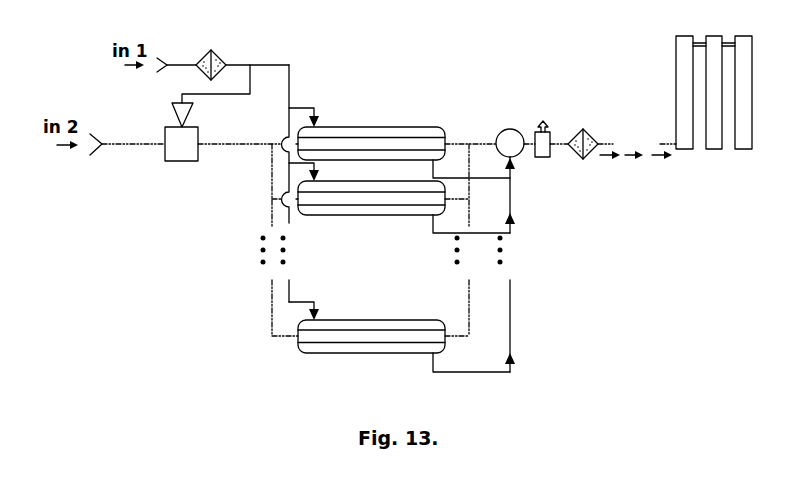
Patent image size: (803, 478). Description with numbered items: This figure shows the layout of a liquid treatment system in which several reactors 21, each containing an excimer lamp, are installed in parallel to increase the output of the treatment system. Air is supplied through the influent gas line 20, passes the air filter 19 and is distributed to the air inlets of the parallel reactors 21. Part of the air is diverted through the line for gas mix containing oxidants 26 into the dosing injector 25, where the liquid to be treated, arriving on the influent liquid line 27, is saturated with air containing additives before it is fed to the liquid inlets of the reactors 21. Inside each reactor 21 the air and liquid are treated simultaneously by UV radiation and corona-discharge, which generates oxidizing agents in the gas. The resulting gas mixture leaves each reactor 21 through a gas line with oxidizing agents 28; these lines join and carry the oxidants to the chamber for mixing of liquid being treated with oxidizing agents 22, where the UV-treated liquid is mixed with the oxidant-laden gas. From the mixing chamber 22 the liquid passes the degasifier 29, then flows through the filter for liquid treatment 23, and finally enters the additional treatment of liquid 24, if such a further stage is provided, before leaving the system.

The air filter 19 is at (197, 52).
The influent gas line 20 is at (257, 163).
The reactor 21 is at (367, 189).
The chamber for mixing of liquid being treated with oxidizing agents 22 is at (488, 91).
The filter for liquid treatment 23 is at (561, 91).
The additional treatment of liquid 24 is at (690, 86).
The dosing injector 25 is at (138, 160).
The line for gas mix containing oxidants 26 is at (232, 95).
The influent liquid line 27 is at (233, 179).
The gas line with oxidizing agents 28 is at (490, 285).
The degasifier 29 is at (566, 169).